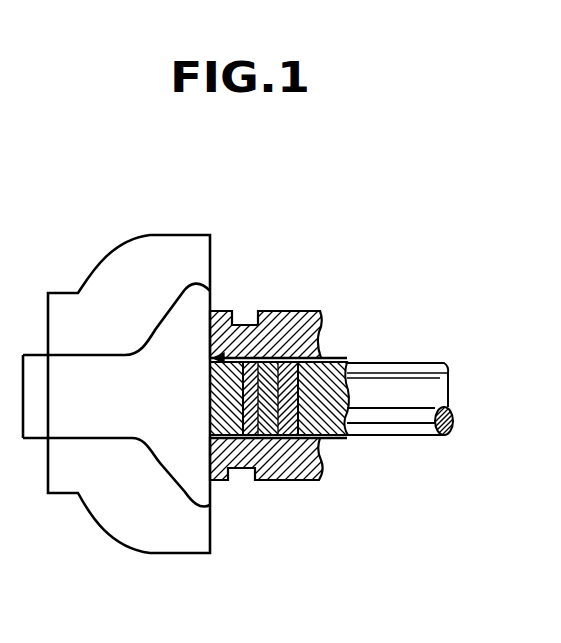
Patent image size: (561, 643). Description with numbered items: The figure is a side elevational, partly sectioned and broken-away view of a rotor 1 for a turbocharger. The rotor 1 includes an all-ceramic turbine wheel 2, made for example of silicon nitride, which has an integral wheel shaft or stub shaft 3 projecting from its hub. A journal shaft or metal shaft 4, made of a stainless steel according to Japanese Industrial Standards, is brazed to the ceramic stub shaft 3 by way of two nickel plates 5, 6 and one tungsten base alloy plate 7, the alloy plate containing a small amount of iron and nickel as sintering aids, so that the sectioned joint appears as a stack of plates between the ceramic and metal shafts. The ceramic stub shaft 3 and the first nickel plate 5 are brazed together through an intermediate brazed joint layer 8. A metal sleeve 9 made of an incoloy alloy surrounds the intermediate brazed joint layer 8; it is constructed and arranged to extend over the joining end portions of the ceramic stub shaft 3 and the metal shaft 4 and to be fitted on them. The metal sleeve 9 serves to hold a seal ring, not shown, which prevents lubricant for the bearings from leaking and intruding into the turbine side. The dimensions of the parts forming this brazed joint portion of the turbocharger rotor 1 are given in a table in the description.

The rotor 1 is at (332, 265).
The turbine wheel 2 is at (84, 300).
The stub shaft 3 is at (222, 482).
The metal shaft 4 is at (400, 372).
The nickel plate 5 is at (251, 337).
The nickel plate 6 is at (298, 383).
The tungsten base alloy plate 7 is at (288, 480).
The intermediate brazed joint layer 8 is at (242, 470).
The metal sleeve 9 is at (312, 483).